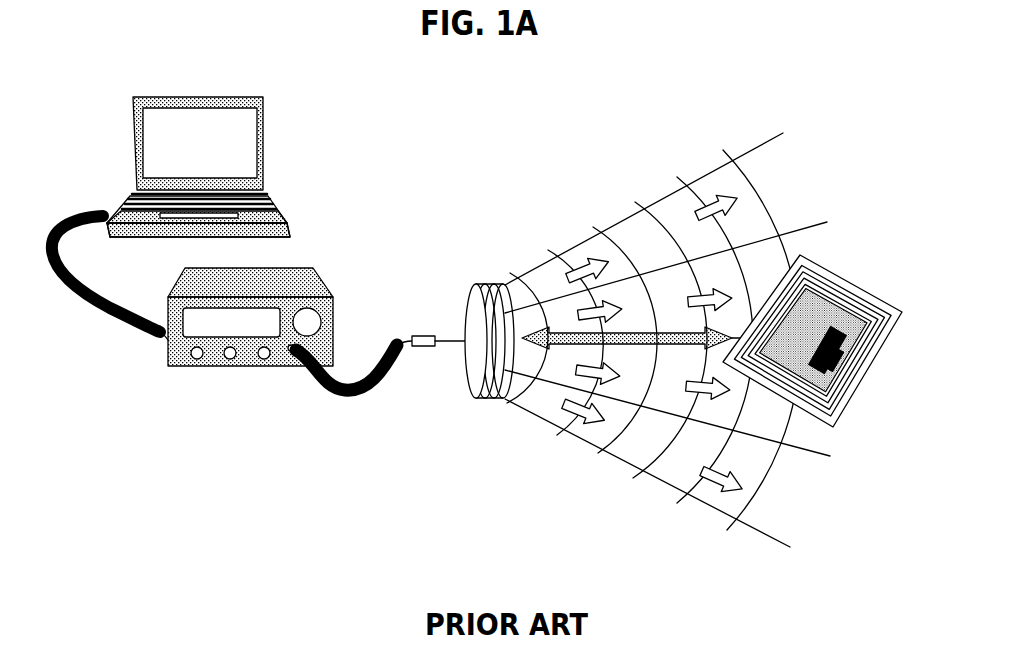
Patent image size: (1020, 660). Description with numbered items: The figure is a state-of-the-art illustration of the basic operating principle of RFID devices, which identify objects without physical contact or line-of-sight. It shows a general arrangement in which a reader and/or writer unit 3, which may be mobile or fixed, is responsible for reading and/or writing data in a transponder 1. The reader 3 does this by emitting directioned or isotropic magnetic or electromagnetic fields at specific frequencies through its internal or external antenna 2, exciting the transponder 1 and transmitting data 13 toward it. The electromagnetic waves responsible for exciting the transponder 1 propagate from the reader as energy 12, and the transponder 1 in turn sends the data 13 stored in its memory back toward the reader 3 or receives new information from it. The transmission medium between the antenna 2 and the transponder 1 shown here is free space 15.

The transponder 1 is at (853, 392).
The antenna 2 is at (478, 283).
The reader and/or writer unit 3 is at (137, 173).
The energy 12 is at (713, 475).
The data 13 is at (573, 336).
The free space 15 is at (672, 195).